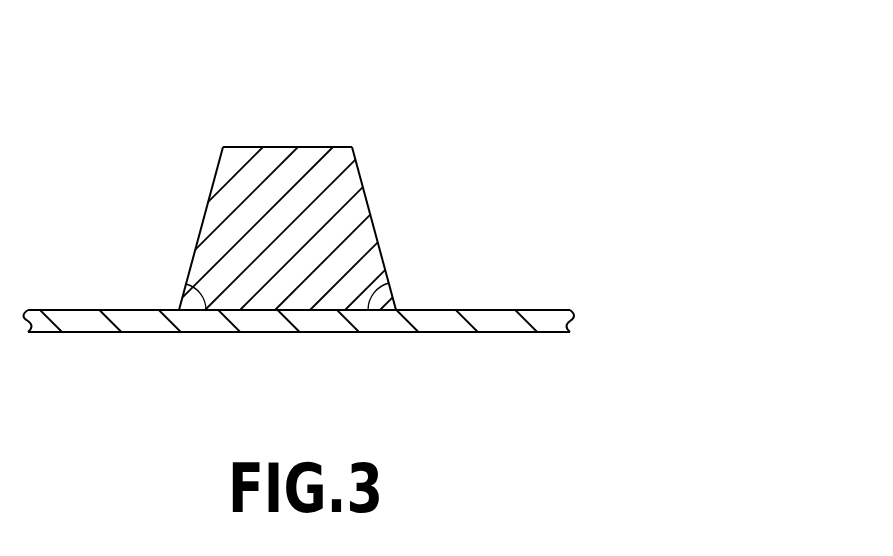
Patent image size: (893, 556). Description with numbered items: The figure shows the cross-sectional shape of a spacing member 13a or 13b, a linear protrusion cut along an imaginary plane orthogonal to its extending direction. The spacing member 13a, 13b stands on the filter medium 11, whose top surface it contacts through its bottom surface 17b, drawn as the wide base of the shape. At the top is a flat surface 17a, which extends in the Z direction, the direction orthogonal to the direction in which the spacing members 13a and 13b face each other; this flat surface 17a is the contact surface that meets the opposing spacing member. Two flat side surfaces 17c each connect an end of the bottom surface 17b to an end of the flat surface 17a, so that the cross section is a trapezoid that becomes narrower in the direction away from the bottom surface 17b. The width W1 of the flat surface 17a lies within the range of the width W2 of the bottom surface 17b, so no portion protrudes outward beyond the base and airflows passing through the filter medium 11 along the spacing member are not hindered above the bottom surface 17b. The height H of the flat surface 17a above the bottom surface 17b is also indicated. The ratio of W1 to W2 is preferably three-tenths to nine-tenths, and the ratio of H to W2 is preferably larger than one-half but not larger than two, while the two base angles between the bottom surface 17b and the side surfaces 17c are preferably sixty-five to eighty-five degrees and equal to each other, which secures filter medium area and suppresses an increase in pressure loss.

The spacing member 13a is at (371, 216).
The spacing member 13b is at (293, 241).
The flat surface 17a is at (228, 147).
The bottom surface 17b is at (221, 311).
The side surfaces 17c is at (205, 213).
The filter medium 11 is at (299, 321).
The width of the flat surface W1 is at (352, 147).
The width of the bottom surface W2 is at (396, 312).
The height of the flat surface H is at (354, 147).
The Z direction Z is at (345, 12).